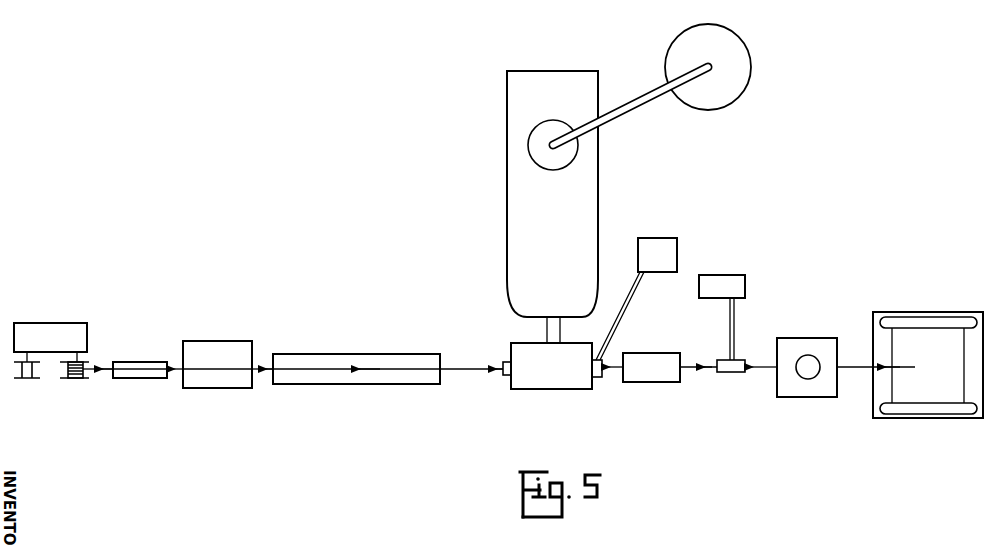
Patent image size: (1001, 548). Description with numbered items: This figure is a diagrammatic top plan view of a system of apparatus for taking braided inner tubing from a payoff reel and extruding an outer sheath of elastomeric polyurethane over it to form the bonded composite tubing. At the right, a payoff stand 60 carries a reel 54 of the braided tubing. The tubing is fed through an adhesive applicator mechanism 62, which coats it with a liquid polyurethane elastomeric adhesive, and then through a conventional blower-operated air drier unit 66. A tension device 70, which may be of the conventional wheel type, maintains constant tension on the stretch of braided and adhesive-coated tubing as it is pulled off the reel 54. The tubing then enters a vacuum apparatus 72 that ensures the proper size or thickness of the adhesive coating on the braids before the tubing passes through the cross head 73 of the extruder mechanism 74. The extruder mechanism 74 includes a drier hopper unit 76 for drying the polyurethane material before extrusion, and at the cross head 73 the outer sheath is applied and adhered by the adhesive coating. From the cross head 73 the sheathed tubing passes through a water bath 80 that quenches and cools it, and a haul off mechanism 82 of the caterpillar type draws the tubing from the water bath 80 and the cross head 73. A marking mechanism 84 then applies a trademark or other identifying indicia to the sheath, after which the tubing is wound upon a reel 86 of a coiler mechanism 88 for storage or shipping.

The reel 54 is at (957, 317).
The payoff stand 60 is at (938, 420).
The adhesive applicator mechanism 62 is at (806, 340).
The air drier unit 66 is at (740, 276).
The tension device 70 is at (661, 380).
The vacuum apparatus 72 is at (680, 250).
The cross head 73 is at (544, 384).
The extruder mechanism 74 is at (606, 207).
The drier hopper unit 76 is at (663, 98).
The water bath 80 is at (353, 353).
The haul off mechanism 82 is at (218, 340).
The marking mechanism 84 is at (137, 361).
The reel 86 is at (78, 380).
The coiler mechanism 88 is at (76, 320).